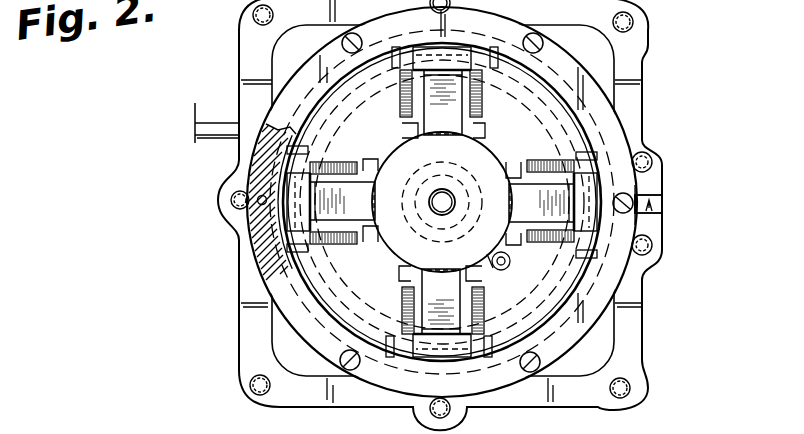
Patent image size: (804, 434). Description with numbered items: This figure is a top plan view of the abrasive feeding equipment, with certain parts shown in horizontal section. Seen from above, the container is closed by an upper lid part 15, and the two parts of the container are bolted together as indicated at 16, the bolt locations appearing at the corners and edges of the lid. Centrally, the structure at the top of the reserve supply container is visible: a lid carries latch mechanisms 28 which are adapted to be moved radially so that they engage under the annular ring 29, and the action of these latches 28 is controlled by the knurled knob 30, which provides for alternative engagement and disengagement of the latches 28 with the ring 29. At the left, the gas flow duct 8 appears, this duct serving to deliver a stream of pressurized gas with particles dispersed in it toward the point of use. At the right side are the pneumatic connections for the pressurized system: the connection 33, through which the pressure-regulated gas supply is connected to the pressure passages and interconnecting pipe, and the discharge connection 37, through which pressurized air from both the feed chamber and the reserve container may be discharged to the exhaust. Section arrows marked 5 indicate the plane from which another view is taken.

The section line 5- 5 is at (517, 240).
The gas flow duct 8 is at (213, 125).
The upper lid part 15 is at (277, 318).
The bolts 16 is at (255, 12).
The latch mechanisms 28 is at (443, 112).
The annular ring 29 is at (600, 117).
The knurled knob 30 is at (403, 155).
The connection 33 is at (655, 216).
The discharge connection 37 is at (641, 195).